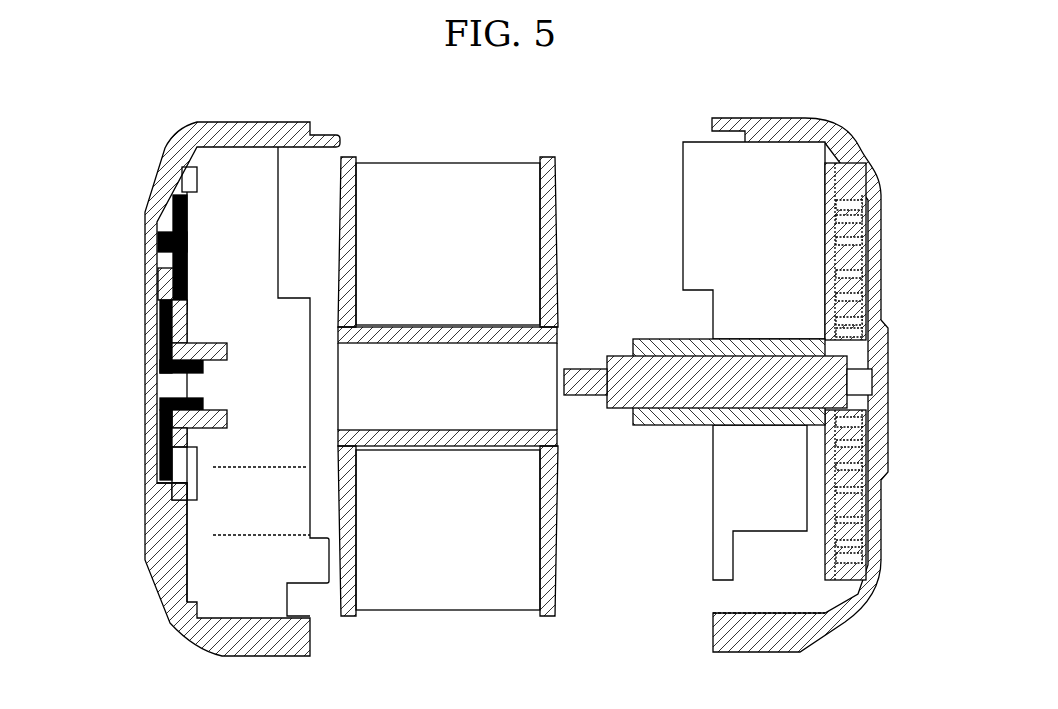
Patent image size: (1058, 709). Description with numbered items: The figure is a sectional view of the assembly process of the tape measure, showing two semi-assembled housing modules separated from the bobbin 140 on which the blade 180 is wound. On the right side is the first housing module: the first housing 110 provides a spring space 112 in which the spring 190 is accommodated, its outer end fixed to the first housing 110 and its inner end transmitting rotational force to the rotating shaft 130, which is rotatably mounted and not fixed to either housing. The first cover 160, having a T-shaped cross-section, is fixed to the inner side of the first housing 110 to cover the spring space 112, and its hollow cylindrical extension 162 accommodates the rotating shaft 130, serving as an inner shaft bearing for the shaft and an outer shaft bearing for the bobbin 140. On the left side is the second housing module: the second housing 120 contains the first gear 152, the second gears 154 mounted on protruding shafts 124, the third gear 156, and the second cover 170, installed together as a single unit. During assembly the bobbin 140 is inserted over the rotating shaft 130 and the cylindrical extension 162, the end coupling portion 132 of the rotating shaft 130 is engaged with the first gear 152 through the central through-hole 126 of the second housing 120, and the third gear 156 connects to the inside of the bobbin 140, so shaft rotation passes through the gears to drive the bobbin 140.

The first housing 110 is at (866, 173).
The spring space 112 is at (848, 503).
The second housing 120 is at (168, 160).
The protruding shaft 124 is at (170, 262).
The central through-hole 126 is at (150, 395).
The rotating shaft 130 is at (795, 386).
The end coupling portion 132 is at (581, 368).
The bobbin 140 is at (552, 446).
The first gear 152 is at (152, 318).
The second gear 154 is at (150, 226).
The third gear 156 is at (160, 370).
The first cover 160 is at (823, 273).
The cylindrical extension 162 is at (683, 338).
The second cover 170 is at (178, 512).
The blade 180 is at (489, 157).
The spring 190 is at (853, 268).